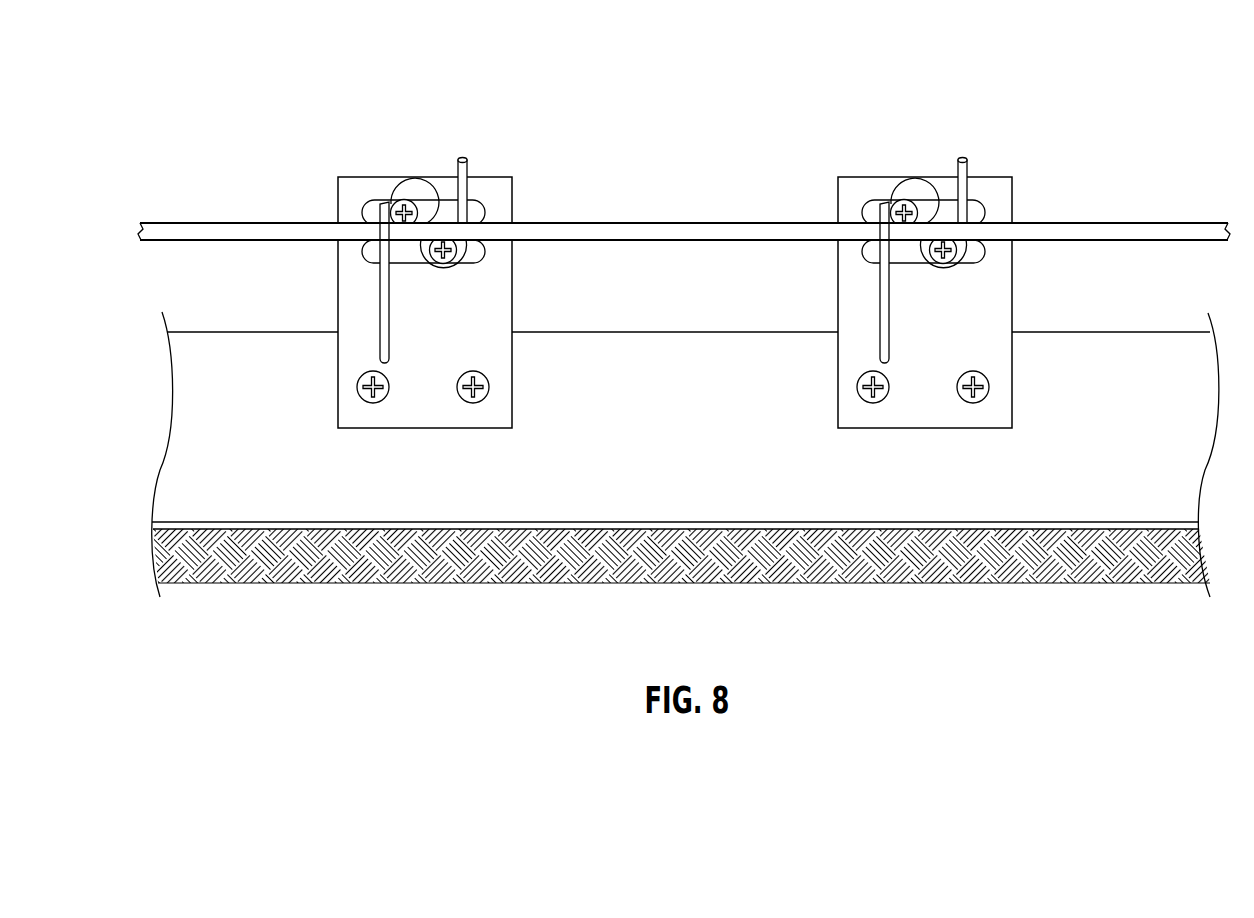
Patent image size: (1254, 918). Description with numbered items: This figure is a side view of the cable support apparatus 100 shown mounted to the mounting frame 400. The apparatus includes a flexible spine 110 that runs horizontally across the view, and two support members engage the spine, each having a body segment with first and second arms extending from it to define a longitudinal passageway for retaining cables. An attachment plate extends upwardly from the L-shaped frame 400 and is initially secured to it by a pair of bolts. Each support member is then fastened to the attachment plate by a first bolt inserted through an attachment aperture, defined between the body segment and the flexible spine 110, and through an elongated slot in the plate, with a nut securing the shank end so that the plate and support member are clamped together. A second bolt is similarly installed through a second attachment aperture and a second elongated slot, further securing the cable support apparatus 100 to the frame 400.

The cable support apparatus 100 is at (819, 60).
The flexible spine 110 is at (687, 223).
The frame 400 is at (190, 458).